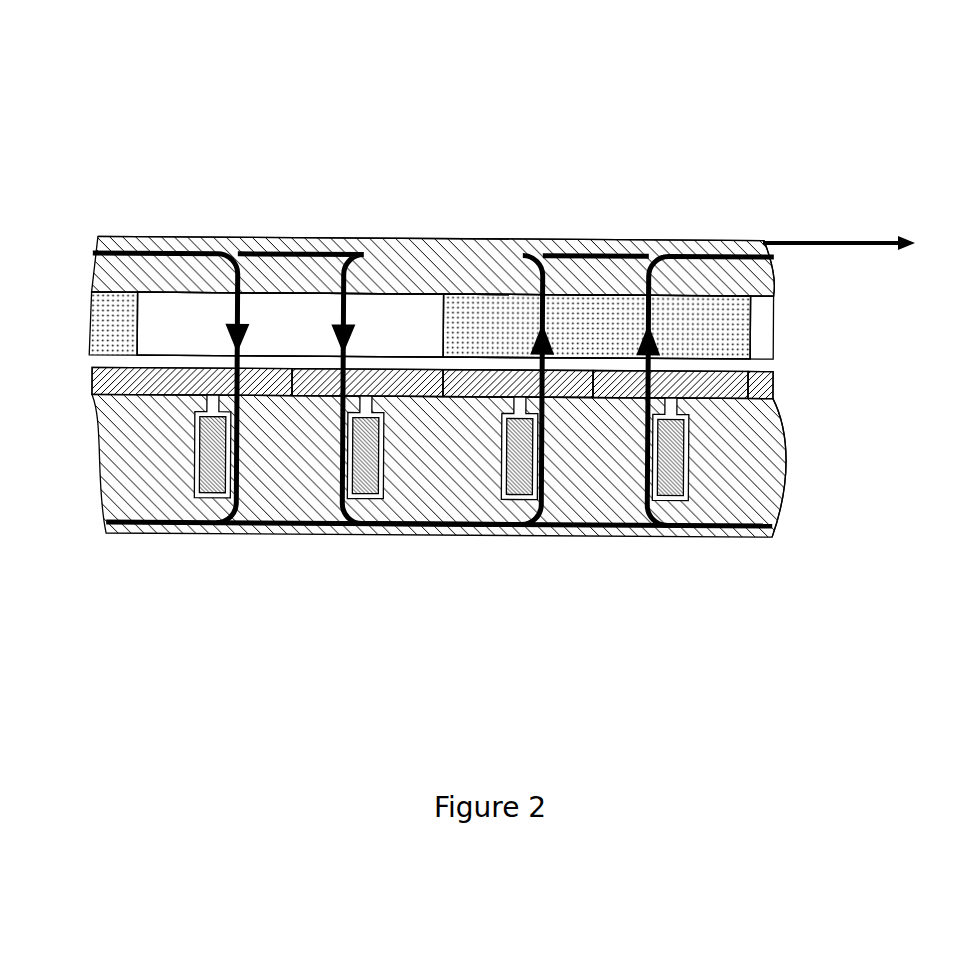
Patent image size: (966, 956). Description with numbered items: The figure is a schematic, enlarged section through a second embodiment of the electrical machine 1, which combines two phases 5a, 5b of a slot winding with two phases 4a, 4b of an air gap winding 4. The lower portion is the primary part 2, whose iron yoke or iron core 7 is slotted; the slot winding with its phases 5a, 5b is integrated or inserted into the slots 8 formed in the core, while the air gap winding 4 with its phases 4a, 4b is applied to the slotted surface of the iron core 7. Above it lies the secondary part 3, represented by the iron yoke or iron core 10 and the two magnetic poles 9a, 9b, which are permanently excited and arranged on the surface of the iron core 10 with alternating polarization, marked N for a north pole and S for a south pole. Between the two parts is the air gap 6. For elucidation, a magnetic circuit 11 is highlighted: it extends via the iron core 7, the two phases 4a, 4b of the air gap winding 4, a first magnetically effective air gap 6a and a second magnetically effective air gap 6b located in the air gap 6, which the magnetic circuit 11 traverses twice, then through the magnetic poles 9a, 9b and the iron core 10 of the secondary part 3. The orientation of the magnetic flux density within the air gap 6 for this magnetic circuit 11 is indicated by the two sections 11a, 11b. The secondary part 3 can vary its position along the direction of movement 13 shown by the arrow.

The electrical machine 1 is at (483, 153).
The primary part 2 is at (90, 369).
The secondary part 3 is at (90, 240).
The air gap winding 4 is at (777, 371).
The first phase of the air gap winding 4a is at (173, 397).
The second phase of the air gap winding 4b is at (306, 397).
The first phase of the slot winding 5a is at (208, 499).
The second phase of the slot winding 5b is at (378, 499).
The air gap 6 is at (752, 364).
The first magnetically effective air gap 6a is at (376, 356).
The second magnetically effective air gap 6b is at (510, 357).
The iron core 7 is at (752, 432).
The slots 8 is at (758, 472).
The first magnetic pole 9a is at (165, 330).
The second magnetic pole 9b is at (713, 330).
The iron core 10 is at (757, 278).
The magnetic circuit 11 is at (418, 526).
The first section 11a is at (340, 355).
The second section 11b is at (552, 350).
The direction of movement 13 is at (857, 243).